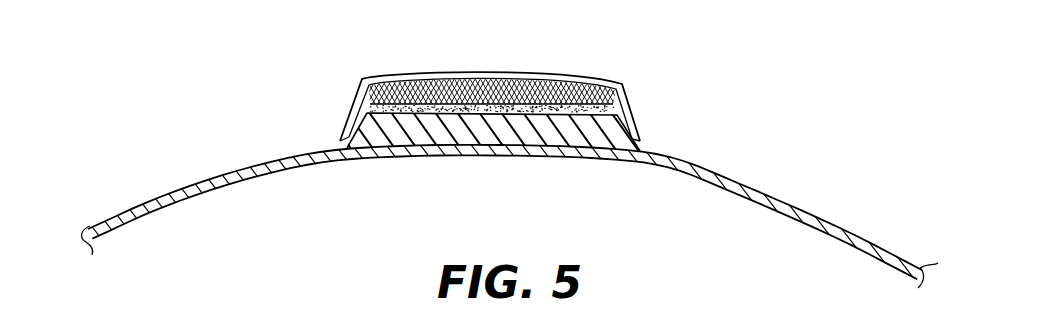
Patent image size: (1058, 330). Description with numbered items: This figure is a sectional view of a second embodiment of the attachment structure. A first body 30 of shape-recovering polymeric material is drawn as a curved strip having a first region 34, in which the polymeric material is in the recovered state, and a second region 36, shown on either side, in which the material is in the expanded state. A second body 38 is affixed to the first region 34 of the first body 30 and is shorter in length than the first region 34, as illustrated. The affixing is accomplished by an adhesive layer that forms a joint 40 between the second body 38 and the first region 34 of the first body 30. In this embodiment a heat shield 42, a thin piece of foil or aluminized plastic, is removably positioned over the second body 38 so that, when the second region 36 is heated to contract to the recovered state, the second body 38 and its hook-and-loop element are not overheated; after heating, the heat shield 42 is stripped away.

The first body 30 is at (233, 161).
The first region 34 is at (502, 140).
The second region 36 is at (217, 188).
The second body 38 is at (364, 80).
The joint 40 is at (617, 115).
The heat shield 42 is at (567, 73).